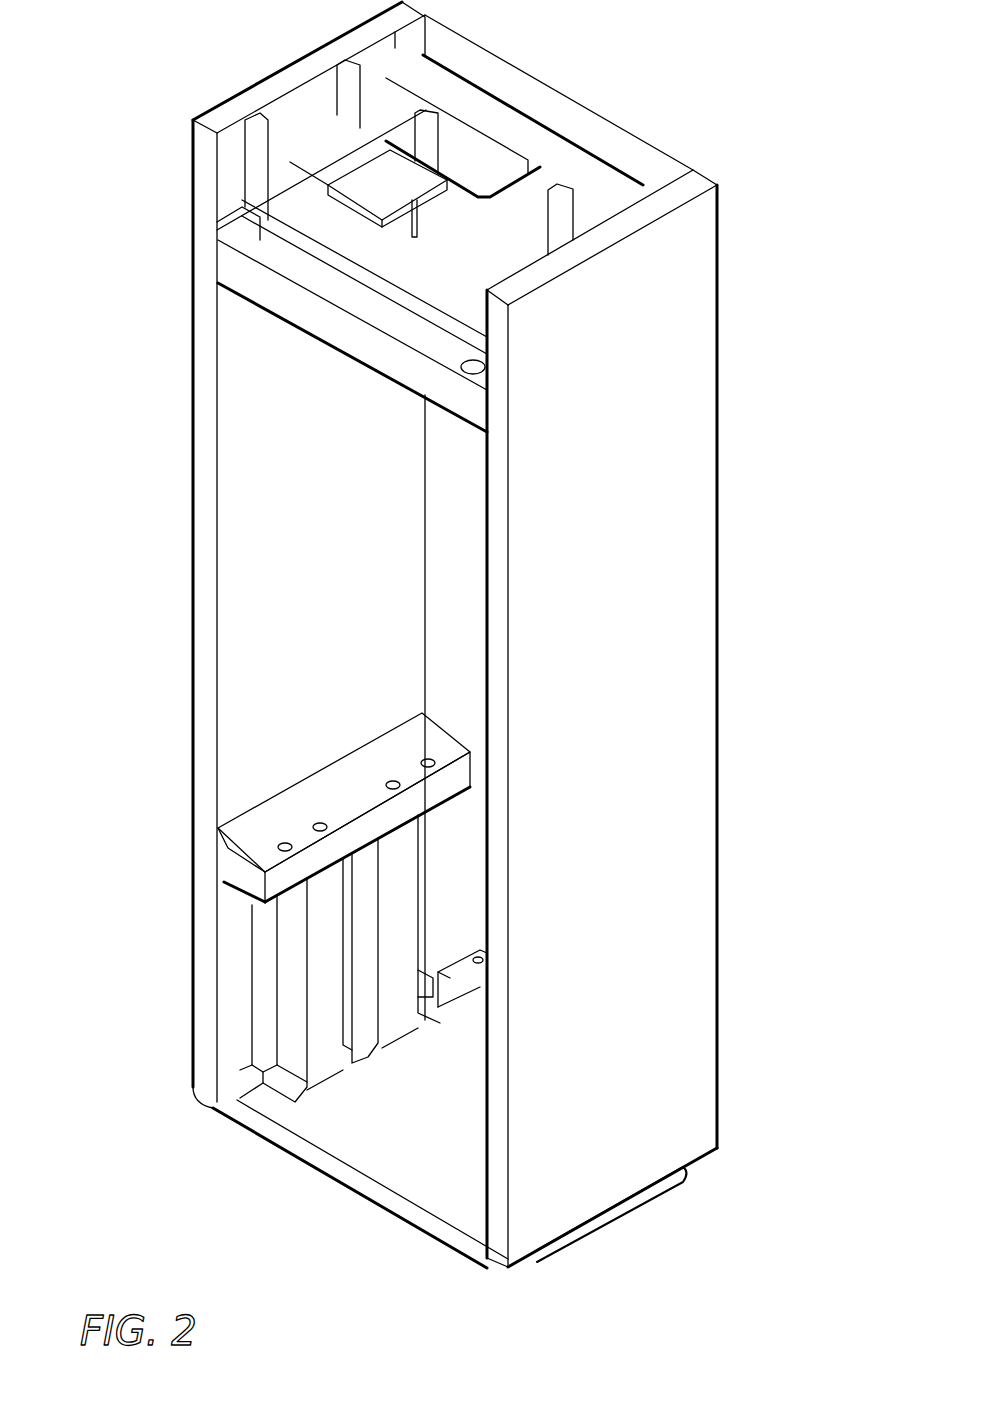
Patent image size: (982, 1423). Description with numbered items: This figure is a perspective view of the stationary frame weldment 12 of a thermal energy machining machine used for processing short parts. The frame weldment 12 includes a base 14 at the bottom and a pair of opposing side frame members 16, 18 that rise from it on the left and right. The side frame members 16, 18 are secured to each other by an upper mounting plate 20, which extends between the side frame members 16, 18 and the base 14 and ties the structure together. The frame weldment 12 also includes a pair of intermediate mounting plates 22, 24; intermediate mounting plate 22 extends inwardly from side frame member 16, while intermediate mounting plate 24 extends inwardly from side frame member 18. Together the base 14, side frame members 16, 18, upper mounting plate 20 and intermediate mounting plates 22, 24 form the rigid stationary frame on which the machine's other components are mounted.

The frame weldment 12 is at (820, 72).
The base 14 is at (345, 1140).
The side frame member 16 is at (253, 458).
The side frame member 18 is at (680, 470).
The upper mounting plate 20 is at (268, 288).
The intermediate mounting plate 22 is at (240, 878).
The intermediate mounting plate 24 is at (458, 1000).